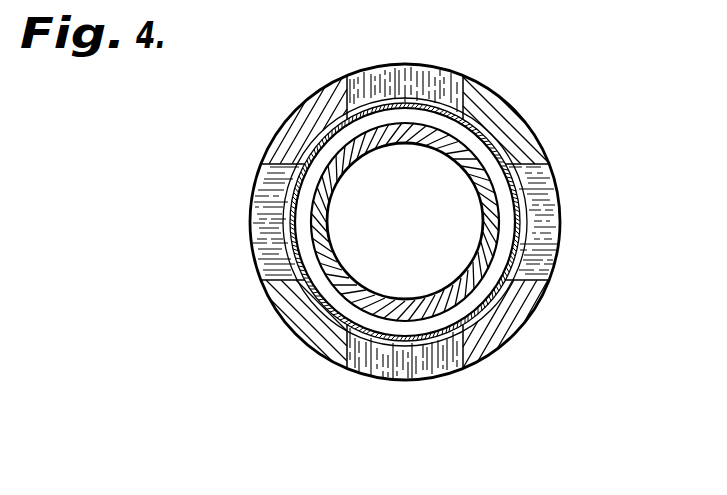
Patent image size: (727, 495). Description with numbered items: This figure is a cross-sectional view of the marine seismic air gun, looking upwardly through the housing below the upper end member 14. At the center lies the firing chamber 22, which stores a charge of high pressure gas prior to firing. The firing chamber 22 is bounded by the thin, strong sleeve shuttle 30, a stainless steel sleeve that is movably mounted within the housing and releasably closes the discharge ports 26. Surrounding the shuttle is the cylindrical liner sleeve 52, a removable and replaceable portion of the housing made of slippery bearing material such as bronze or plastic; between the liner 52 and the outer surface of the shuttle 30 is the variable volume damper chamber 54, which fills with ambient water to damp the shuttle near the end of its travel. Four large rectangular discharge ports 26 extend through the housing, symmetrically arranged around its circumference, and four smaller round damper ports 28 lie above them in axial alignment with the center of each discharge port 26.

The upper end member 14 is at (517, 133).
The firing chamber 22 is at (455, 228).
The discharge ports 26 is at (449, 100).
The damper ports 28 is at (417, 100).
The sleeve shuttle 30 is at (327, 255).
The liner sleeve 52 is at (503, 300).
The variable volume damper chamber 54 is at (473, 312).